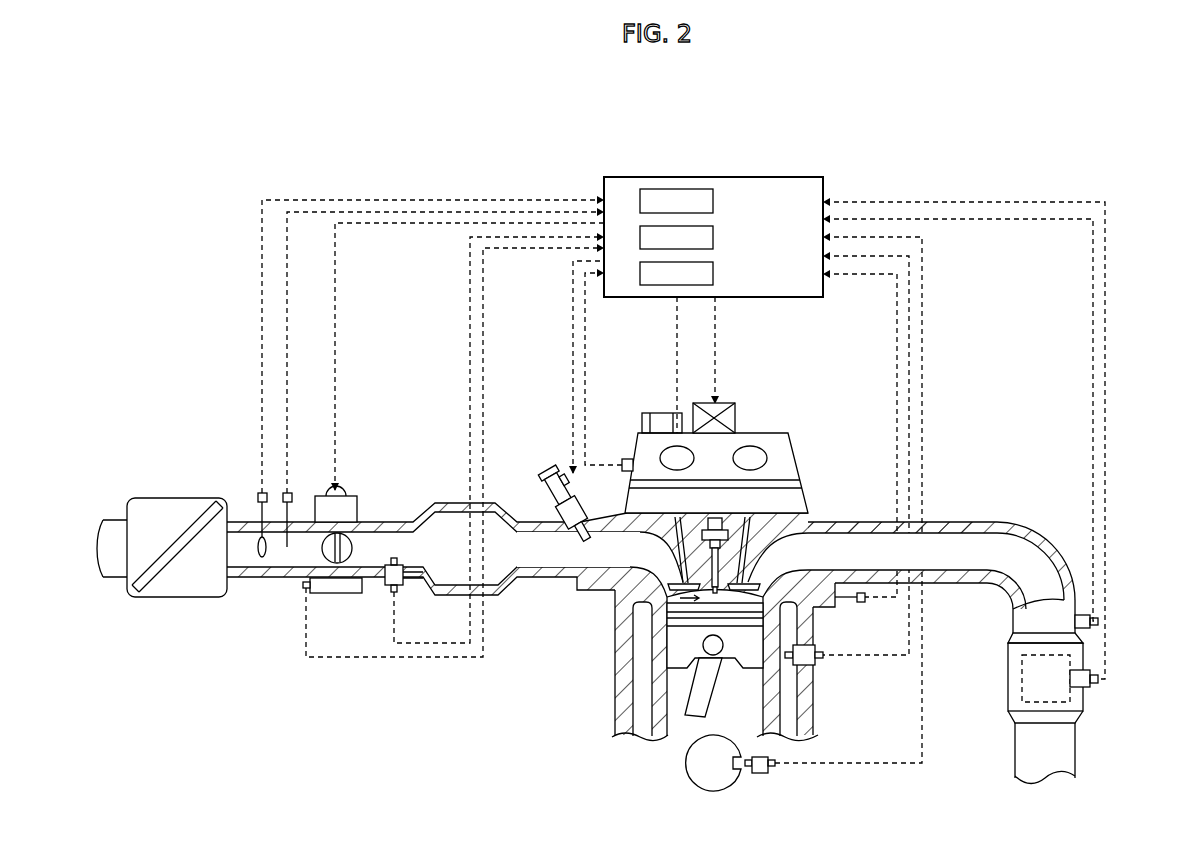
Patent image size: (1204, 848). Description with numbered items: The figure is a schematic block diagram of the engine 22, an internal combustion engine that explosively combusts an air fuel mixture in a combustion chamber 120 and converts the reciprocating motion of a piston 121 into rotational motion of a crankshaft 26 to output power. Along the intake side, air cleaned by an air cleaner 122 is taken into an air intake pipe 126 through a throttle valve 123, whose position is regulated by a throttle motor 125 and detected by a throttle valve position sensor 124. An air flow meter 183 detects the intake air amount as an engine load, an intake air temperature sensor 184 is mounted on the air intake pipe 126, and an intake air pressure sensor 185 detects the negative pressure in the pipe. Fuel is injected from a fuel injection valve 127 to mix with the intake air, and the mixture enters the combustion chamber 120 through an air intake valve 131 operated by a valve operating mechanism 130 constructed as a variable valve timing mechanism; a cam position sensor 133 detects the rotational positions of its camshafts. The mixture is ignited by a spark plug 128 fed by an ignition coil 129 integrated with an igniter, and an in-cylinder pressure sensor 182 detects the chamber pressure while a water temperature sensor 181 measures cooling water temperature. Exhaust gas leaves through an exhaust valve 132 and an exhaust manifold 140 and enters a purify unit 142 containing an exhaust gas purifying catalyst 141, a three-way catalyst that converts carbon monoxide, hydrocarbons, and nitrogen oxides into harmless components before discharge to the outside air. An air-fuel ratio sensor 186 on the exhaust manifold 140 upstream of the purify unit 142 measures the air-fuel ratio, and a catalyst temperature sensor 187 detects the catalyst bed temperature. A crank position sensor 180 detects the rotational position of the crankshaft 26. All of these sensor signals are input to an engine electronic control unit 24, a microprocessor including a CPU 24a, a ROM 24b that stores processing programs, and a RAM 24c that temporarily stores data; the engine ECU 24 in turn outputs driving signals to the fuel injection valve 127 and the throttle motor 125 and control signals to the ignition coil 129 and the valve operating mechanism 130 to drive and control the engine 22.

The engine 22 is at (815, 441).
The engine electronic control unit 24 is at (710, 177).
The CPU 24a is at (713, 202).
The ROM 24b is at (713, 238).
The RAM 24c is at (713, 274).
The crankshaft 26 is at (686, 764).
The combustion chamber 120 is at (678, 594).
The piston 121 is at (682, 659).
The air cleaner 122 is at (182, 498).
The throttle valve 123 is at (323, 549).
The throttle valve position sensor 124 is at (338, 594).
The throttle motor 125 is at (348, 496).
The air intake pipe 126 is at (412, 518).
The fuel injection valve 127 is at (562, 514).
The spark plug 128 is at (719, 563).
The ignition coil 129 is at (735, 408).
The valve operating mechanism 130 is at (798, 462).
The air intake valve 131 is at (678, 579).
The exhaust valve 132 is at (746, 580).
The cam position sensor 133 is at (627, 458).
The exhaust manifold 140 is at (957, 572).
The exhaust gas purifying catalyst 141 is at (1020, 683).
The purify unit 142 is at (1011, 708).
The crank position sensor 180 is at (768, 774).
The water temperature sensor 181 is at (823, 661).
The in-cylinder pressure sensor 182 is at (861, 603).
The air flow meter 183 is at (260, 493).
The intake air temperature sensor 184 is at (288, 493).
The intake air pressure sensor 185 is at (405, 592).
The air-fuel ratio sensor 186 is at (1092, 628).
The catalyst temperature sensor 187 is at (1092, 687).